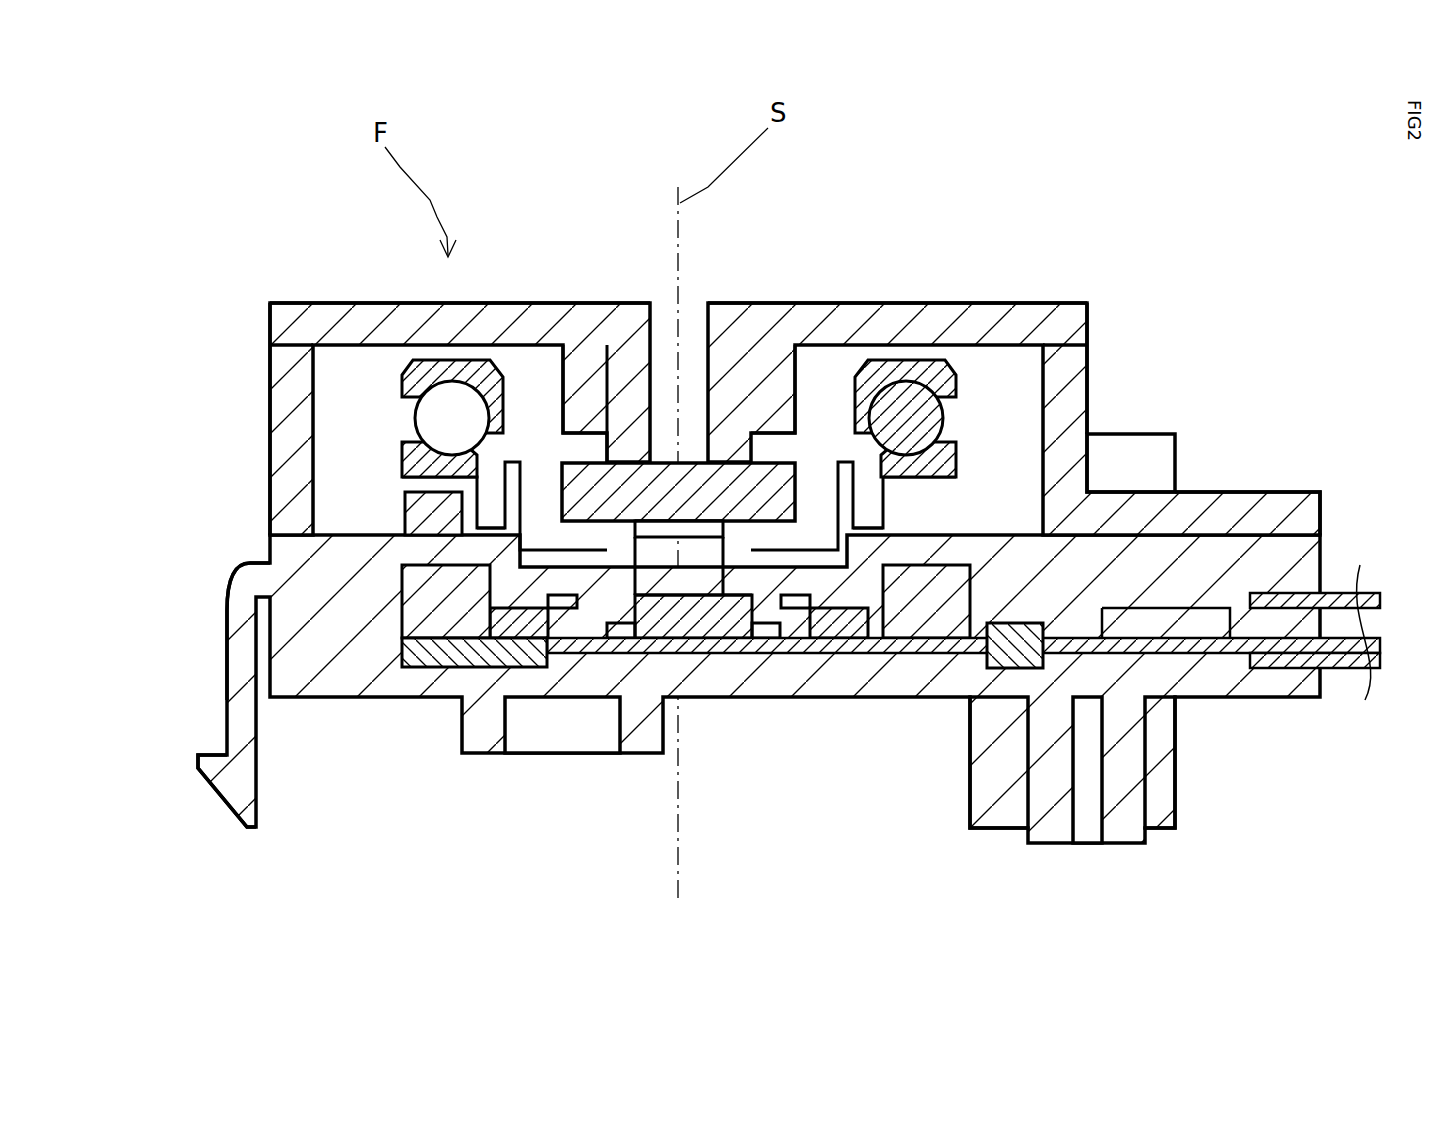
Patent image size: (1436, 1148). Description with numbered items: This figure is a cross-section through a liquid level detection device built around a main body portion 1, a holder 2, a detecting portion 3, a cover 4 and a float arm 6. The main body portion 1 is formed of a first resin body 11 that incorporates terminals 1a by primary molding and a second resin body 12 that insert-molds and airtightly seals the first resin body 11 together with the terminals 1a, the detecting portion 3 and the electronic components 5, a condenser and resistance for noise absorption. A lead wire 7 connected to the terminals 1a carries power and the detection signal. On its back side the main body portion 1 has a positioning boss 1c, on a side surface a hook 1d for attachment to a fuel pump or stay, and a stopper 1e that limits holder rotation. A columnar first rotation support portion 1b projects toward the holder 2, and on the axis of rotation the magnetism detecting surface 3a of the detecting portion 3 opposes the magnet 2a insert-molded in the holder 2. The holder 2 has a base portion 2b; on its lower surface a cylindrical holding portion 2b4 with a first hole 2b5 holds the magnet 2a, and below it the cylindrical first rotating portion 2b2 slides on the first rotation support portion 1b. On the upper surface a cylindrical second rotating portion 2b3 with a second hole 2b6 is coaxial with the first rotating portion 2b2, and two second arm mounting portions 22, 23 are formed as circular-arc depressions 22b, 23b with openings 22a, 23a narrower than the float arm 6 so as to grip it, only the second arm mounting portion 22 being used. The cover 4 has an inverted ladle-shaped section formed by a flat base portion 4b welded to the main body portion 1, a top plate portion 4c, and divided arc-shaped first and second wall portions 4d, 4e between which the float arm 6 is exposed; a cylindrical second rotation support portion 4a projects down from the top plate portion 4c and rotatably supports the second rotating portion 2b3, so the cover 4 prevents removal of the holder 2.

The main body portion 1 is at (759, 689).
The terminals 1a is at (1192, 688).
The first rotation support portion 1b is at (693, 701).
The positioning boss 1c is at (818, 810).
The hook 1d is at (710, 785).
The stopper 1e is at (323, 493).
The holder 2 is at (610, 406).
The magnet 2a is at (678, 358).
The base portion 2b is at (679, 367).
The first rotating portion 2b2 is at (679, 705).
The second rotating portion 2b3 is at (685, 377).
The holding portion 2b4 is at (559, 639).
The first hole 2b5 is at (665, 696).
The second hole 2b6 is at (643, 304).
The detecting portion 3 is at (693, 693).
The magnetism detecting surface 3a is at (699, 680).
The cover 4 is at (795, 397).
The second rotation support portion 4a is at (686, 304).
The base portion 4b is at (1247, 465).
The top plate portion 4c is at (678, 245).
The first wall portion 4d is at (220, 419).
The second wall portion 4e is at (1135, 368).
The electronic components 5 is at (664, 715).
The float arm 6 is at (924, 320).
The lead wire 7 is at (963, 659).
The first resin body 11 is at (720, 768).
The second resin body 12 is at (231, 618).
The second arm mounting portion 22 is at (940, 329).
The opening 22a is at (1077, 306).
The depression 22b is at (1043, 436).
The second arm mounting portion 23 is at (434, 340).
The opening 23a is at (248, 337).
The depression 23b is at (311, 418).